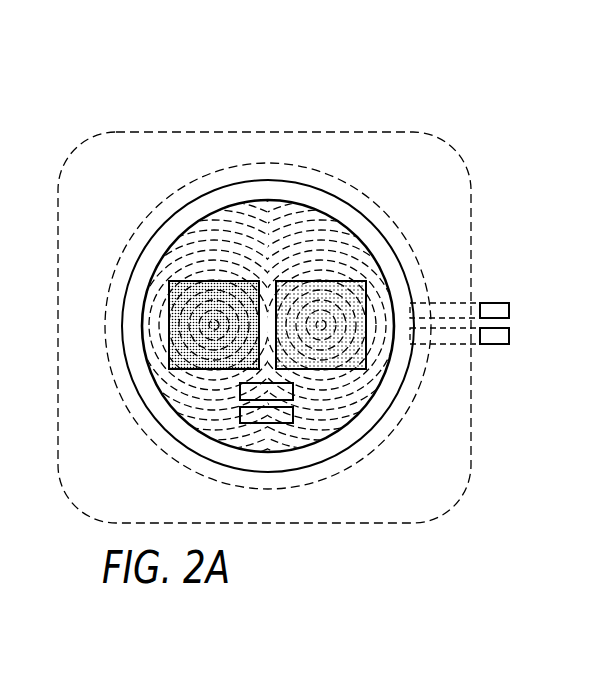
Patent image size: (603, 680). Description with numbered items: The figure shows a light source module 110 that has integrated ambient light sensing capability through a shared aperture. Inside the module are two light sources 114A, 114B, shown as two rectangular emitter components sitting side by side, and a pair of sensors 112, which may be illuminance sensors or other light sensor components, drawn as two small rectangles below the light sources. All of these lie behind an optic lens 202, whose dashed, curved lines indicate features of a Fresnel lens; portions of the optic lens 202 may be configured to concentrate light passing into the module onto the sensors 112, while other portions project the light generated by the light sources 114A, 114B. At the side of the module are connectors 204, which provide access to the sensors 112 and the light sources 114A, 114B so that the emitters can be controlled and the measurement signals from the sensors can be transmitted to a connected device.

The light source module 110 is at (308, 504).
The optic lens 202 is at (193, 245).
The light source 114A is at (225, 282).
The light source 114B is at (342, 282).
The sensors 112 is at (250, 420).
The connectors 204 is at (508, 300).